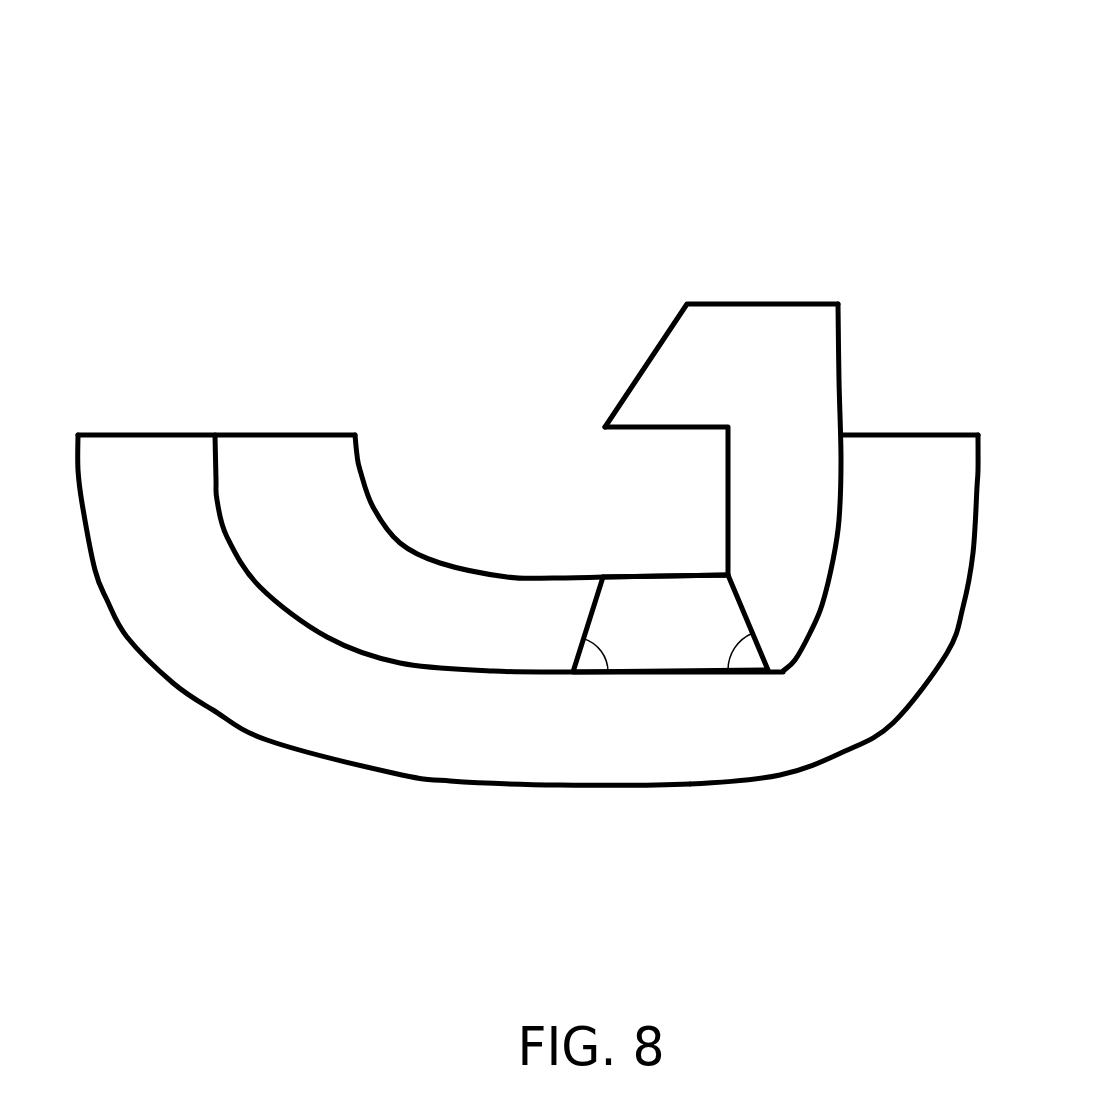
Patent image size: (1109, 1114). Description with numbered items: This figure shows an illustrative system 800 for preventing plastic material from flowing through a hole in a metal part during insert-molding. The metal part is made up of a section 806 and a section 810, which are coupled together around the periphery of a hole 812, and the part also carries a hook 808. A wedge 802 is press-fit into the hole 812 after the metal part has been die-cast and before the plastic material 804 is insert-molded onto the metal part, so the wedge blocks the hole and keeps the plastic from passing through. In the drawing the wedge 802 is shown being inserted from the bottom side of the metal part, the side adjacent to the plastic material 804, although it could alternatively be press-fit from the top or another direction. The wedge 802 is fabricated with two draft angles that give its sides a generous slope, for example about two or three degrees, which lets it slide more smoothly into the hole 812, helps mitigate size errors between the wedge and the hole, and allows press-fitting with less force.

The system 800 is at (568, 40).
The wedge 802 is at (662, 660).
The plastic material 804 is at (140, 492).
The section 806 is at (812, 543).
The hook 808 is at (697, 357).
The section 810 is at (313, 503).
The hole 812 is at (662, 552).